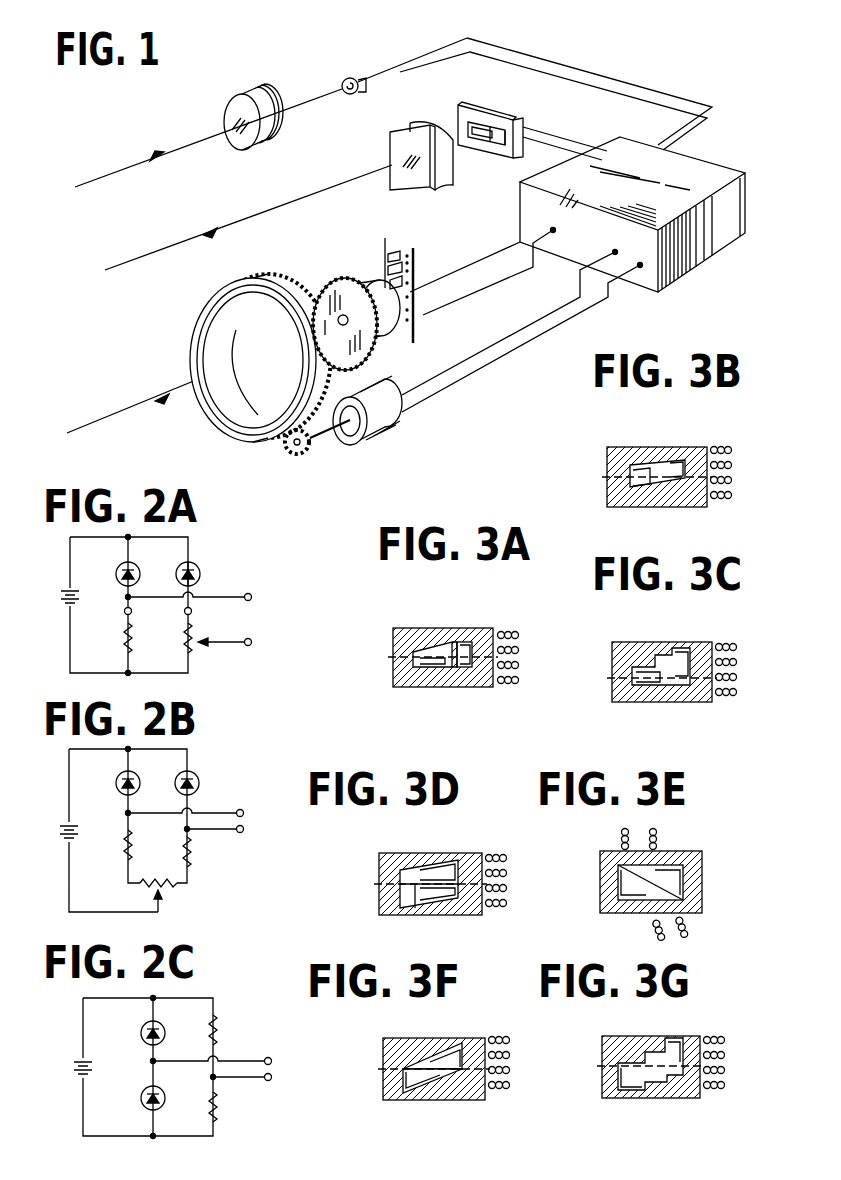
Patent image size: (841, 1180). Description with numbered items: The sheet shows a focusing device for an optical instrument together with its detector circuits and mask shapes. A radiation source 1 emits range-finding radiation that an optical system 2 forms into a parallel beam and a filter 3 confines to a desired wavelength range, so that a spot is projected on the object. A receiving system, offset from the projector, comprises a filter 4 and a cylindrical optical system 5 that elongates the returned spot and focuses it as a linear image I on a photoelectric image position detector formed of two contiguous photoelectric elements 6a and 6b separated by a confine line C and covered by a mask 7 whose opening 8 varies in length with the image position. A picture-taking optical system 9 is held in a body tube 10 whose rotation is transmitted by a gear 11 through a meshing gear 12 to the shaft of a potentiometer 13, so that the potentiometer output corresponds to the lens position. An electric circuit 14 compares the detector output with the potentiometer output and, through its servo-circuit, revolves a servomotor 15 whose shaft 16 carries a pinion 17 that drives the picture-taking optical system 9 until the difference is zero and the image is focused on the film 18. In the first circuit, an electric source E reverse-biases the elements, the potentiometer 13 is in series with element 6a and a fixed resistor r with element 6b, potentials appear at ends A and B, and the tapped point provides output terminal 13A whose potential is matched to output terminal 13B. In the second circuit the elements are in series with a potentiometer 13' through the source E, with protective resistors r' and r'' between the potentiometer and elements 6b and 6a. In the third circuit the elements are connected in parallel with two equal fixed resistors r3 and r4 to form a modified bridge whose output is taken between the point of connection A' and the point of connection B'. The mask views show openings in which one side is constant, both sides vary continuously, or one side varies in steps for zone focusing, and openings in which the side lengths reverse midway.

In FIG. 1, the radiation source 1 is at (348, 78).
In FIG. 1, the optical system 2 is at (268, 97).
In FIG. 1, the filter 3 is at (230, 110).
In FIG. 1, the filter 4 is at (424, 183).
In FIG. 1, the optical system 5 is at (447, 172).
In FIG. 1, the photoelectric element 6a is at (522, 123).
In FIG. 2A, the photoelectric element 6a is at (200, 571).
In FIG. 2B, the photoelectric element 6a is at (209, 776).
In FIG. 2C, the photoelectric element 6a is at (142, 1031).
In FIG. 3A, the photoelectric element 6a is at (468, 648).
In FIG. 3B, the photoelectric element 6a is at (678, 466).
In FIG. 3C, the photoelectric element 6a is at (682, 662).
In FIG. 3D, the photoelectric element 6a is at (440, 876).
In FIG. 3E, the photoelectric element 6a is at (672, 876).
In FIG. 3F, the photoelectric element 6a is at (445, 1060).
In FIG. 3G, the photoelectric element 6a is at (672, 1056).
In FIG. 1, the photoelectric element 6b is at (512, 150).
In FIG. 2A, the photoelectric element 6b is at (116, 572).
In FIG. 2B, the photoelectric element 6b is at (106, 776).
In FIG. 2C, the photoelectric element 6b is at (162, 1117).
In FIG. 3A, the photoelectric element 6b is at (435, 662).
In FIG. 3B, the photoelectric element 6b is at (641, 483).
In FIG. 3C, the photoelectric element 6b is at (683, 684).
In FIG. 3D, the photoelectric element 6b is at (440, 896).
In FIG. 3E, the photoelectric element 6b is at (630, 886).
In FIG. 3F, the photoelectric element 6b is at (430, 1078).
In FIG. 3G, the photoelectric element 6b is at (628, 1086).
In FIG. 1, the mask 7 is at (500, 148).
In FIG. 3A, the mask 7 is at (410, 633).
In FIG. 3B, the mask 7 is at (629, 452).
In FIG. 3C, the mask 7 is at (626, 697).
In FIG. 3D, the mask 7 is at (400, 862).
In FIG. 3E, the mask 7 is at (702, 860).
In FIG. 3F, the mask 7 is at (385, 1082).
In FIG. 3G, the mask 7 is at (680, 1086).
In FIG. 1, the opening 8 is at (498, 128).
In FIG. 3A, the opening 8 is at (428, 646).
In FIG. 3B, the opening 8 is at (653, 463).
In FIG. 3C, the opening 8 is at (640, 660).
In FIG. 3D, the opening 8 is at (424, 866).
In FIG. 3E, the opening 8 is at (616, 866).
In FIG. 3F, the opening 8 is at (410, 1093).
In FIG. 3G, the opening 8 is at (653, 1046).
In FIG. 1, the picture-taking optical system 9 is at (258, 410).
In FIG. 1, the body tube 10 is at (196, 310).
In FIG. 1, the gear 11 is at (270, 280).
In FIG. 1, the gear 12 is at (335, 290).
In FIG. 1, the potentiometer 13 is at (388, 330).
In FIG. 2A, the potentiometer 13 is at (208, 651).
In FIG. 2A, the output terminal 13A is at (252, 640).
In FIG. 2A, the output terminal 13B is at (252, 595).
In FIG. 2B, the potentiometer 13' is at (177, 899).
In FIG. 1, the electric circuit 14 is at (620, 199).
In FIG. 1, the servomotor 15 is at (395, 425).
In FIG. 1, the shaft 16 is at (325, 438).
In FIG. 1, the pinion 17 is at (296, 456).
In FIG. 1, the film 18 is at (413, 253).
In FIG. 1, the linear image I is at (494, 120).
In FIG. 3A, the linear image I is at (456, 648).
In FIG. 3A, the confine line C is at (445, 662).
In FIG. 3B, the confine line C is at (679, 481).
In FIG. 3C, the confine line C is at (660, 684).
In FIG. 3D, the confine line C is at (418, 896).
In FIG. 3E, the confine line C is at (648, 880).
In FIG. 3F, the confine line C is at (447, 1073).
In FIG. 3G, the confine line C is at (652, 1076).
In FIG. 2A, the electric source E is at (85, 598).
In FIG. 2B, the electric source E is at (83, 843).
In FIG. 2C, the electric source E is at (96, 1078).
In FIG. 2A, the end A is at (203, 615).
In FIG. 2A, the end B is at (143, 615).
In FIG. 2C, the point of connection A' is at (212, 1078).
In FIG. 2C, the point of connection B' is at (243, 1096).
In FIG. 2A, the fixed resistor r is at (144, 643).
In FIG. 2B, the resistor r' is at (138, 845).
In FIG. 2B, the resistor r'' is at (199, 852).
In FIG. 2C, the fixed resistor r3 is at (227, 1031).
In FIG. 2C, the fixed resistor r4 is at (227, 1109).